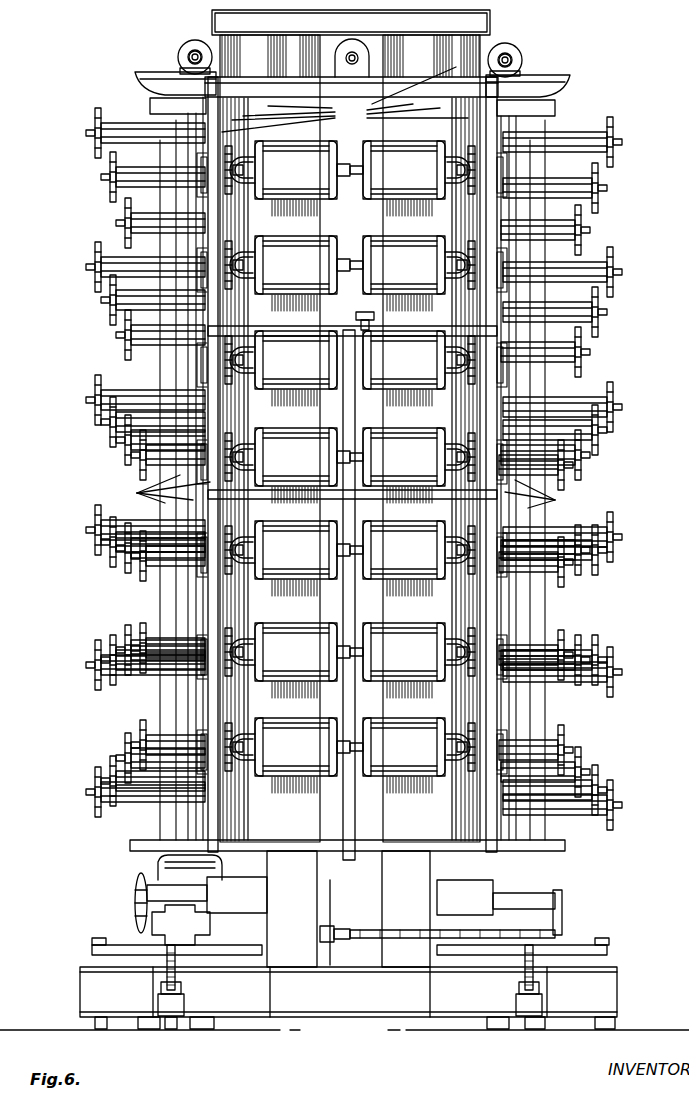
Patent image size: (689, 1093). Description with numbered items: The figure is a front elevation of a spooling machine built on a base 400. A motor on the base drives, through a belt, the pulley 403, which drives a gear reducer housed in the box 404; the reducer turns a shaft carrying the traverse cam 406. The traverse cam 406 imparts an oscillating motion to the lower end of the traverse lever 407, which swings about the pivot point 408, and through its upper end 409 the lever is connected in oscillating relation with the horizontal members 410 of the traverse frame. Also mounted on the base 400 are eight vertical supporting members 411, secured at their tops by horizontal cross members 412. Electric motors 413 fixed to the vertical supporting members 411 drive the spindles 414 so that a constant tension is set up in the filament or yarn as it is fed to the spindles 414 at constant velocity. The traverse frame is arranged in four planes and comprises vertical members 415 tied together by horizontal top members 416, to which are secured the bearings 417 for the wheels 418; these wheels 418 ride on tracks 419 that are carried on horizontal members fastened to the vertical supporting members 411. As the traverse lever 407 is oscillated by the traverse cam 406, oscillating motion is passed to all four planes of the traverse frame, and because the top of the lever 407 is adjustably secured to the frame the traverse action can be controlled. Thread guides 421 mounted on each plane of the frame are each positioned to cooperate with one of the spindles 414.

The base 400 is at (290, 1003).
The pulley 403 is at (133, 894).
The box 404 is at (158, 863).
The traverse cam 406 is at (335, 935).
The traverse lever 407 is at (347, 806).
The pivot point 408 is at (352, 635).
The upper end 409 is at (332, 352).
The horizontal members 410 is at (345, 332).
The vertical supporting members 411 is at (345, 99).
The horizontal cross members 412 is at (351, 22).
The electric motors 413 is at (350, 458).
The spindles 414 is at (236, 663).
The vertical members 415 is at (153, 489).
The horizontal top members 416 is at (375, 82).
The bearings 417 is at (180, 62).
The wheels 418 is at (188, 46).
The tracks 419 is at (145, 85).
The thread guides 421 is at (135, 358).